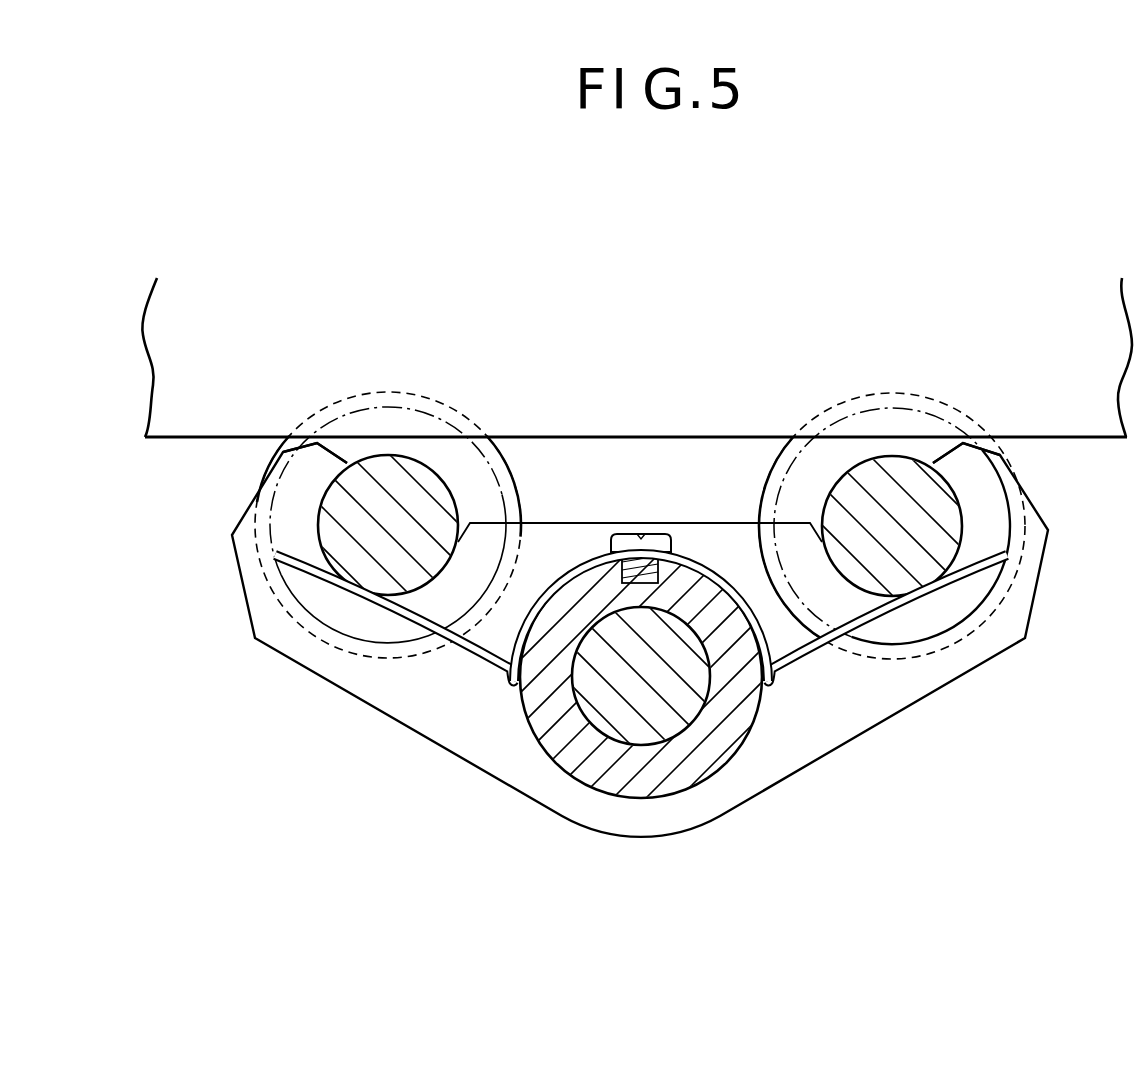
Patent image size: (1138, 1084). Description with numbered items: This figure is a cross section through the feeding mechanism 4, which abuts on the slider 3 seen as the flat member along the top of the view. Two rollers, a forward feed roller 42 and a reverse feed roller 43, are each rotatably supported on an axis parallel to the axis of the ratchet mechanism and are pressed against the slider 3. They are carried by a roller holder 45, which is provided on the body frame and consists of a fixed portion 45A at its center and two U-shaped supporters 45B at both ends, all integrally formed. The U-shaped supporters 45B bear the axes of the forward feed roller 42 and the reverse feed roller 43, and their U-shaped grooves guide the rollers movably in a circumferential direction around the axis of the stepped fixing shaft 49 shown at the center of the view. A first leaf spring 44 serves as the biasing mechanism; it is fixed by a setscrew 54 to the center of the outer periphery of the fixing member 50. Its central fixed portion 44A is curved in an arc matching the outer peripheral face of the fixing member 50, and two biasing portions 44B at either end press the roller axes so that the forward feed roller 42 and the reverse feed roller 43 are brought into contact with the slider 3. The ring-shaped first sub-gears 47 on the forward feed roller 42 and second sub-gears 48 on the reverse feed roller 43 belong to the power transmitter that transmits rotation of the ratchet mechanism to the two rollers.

The slider 3 is at (198, 438).
The feeding mechanism 4 is at (634, 617).
The forward feed roller 42 is at (415, 458).
The reverse feed roller 43 is at (897, 456).
The first leaf spring 44 is at (655, 683).
The fixed portion 44A is at (757, 622).
The biasing portions 44B is at (410, 620).
The roller holder 45 is at (640, 679).
The fixed portion 45A is at (727, 820).
The U-shaped supporters 45B is at (338, 597).
The first sub-gears 47 is at (512, 474).
The second sub-gears 48 is at (776, 462).
The stepped fixing shaft 49 is at (569, 712).
The fixing member 50 is at (613, 799).
The setscrew 54 is at (650, 534).